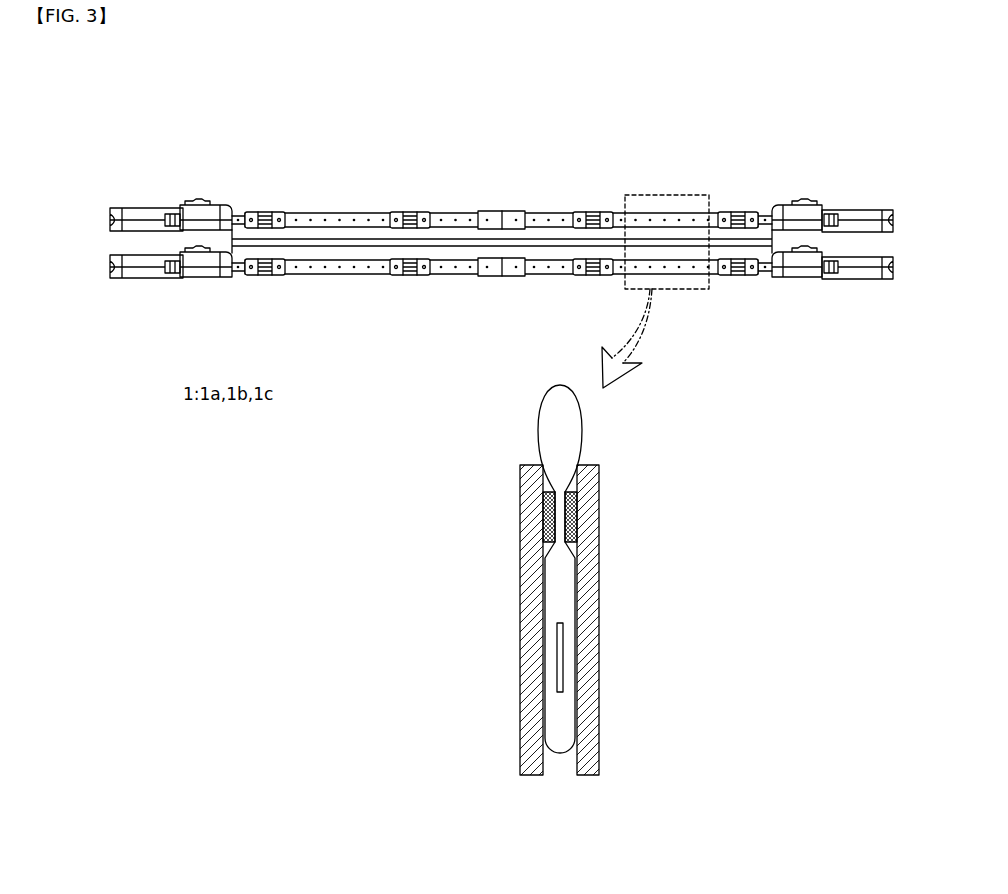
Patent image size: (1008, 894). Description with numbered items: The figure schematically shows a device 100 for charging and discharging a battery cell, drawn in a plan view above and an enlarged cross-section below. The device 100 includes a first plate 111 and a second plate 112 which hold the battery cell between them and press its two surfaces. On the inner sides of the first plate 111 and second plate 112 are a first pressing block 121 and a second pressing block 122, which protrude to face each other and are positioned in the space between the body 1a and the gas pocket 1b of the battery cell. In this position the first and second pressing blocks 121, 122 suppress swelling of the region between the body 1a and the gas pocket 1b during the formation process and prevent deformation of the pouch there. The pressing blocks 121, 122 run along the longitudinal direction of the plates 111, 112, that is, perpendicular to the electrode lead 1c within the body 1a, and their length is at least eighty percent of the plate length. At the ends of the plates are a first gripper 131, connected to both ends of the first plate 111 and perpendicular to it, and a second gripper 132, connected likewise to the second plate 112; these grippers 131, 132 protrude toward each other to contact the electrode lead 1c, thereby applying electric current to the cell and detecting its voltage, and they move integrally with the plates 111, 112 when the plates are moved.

The device for charging and discharging a battery cell 100 is at (183, 123).
The first gripper 131 is at (786, 204).
The second gripper 132 is at (783, 278).
The first plate 111 is at (522, 714).
The second plate 112 is at (600, 694).
The first pressing block 121 is at (545, 517).
The second pressing block 122 is at (577, 503).
The body 1a is at (570, 587).
The gas pocket 1b is at (582, 441).
The electrode lead 1c is at (562, 649).